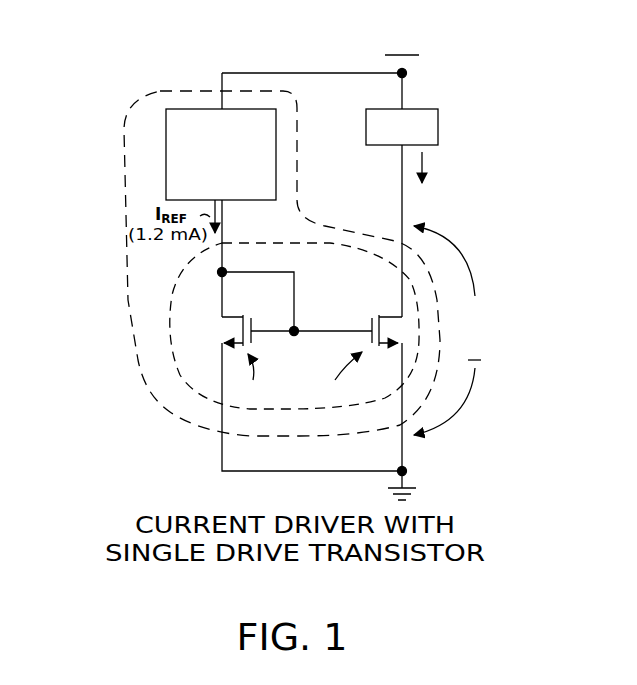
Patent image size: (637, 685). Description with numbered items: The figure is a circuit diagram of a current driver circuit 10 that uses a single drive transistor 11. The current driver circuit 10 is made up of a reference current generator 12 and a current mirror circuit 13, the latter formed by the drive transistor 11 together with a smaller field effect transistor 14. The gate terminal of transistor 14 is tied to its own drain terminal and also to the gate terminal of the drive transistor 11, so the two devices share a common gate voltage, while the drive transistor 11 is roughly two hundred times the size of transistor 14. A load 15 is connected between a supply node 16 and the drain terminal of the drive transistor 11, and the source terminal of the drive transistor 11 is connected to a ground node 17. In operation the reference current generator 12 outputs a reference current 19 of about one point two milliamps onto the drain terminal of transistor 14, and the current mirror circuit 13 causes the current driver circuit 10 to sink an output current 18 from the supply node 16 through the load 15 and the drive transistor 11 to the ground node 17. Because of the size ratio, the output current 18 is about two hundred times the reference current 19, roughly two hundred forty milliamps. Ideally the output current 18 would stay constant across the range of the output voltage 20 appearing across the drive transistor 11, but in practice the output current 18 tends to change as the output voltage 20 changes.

The current driver circuit 10 is at (185, 90).
The drive transistor 11 is at (371, 320).
The reference current generator 12 is at (258, 200).
The current mirror circuit 13 is at (165, 345).
The field effect transistor 14 is at (226, 331).
The load 15 is at (441, 127).
The supply node 16 is at (408, 73).
The ground node 17 is at (408, 471).
The output current 18 is at (424, 163).
The reference current 19 is at (225, 287).
The output voltage 20 is at (453, 330).